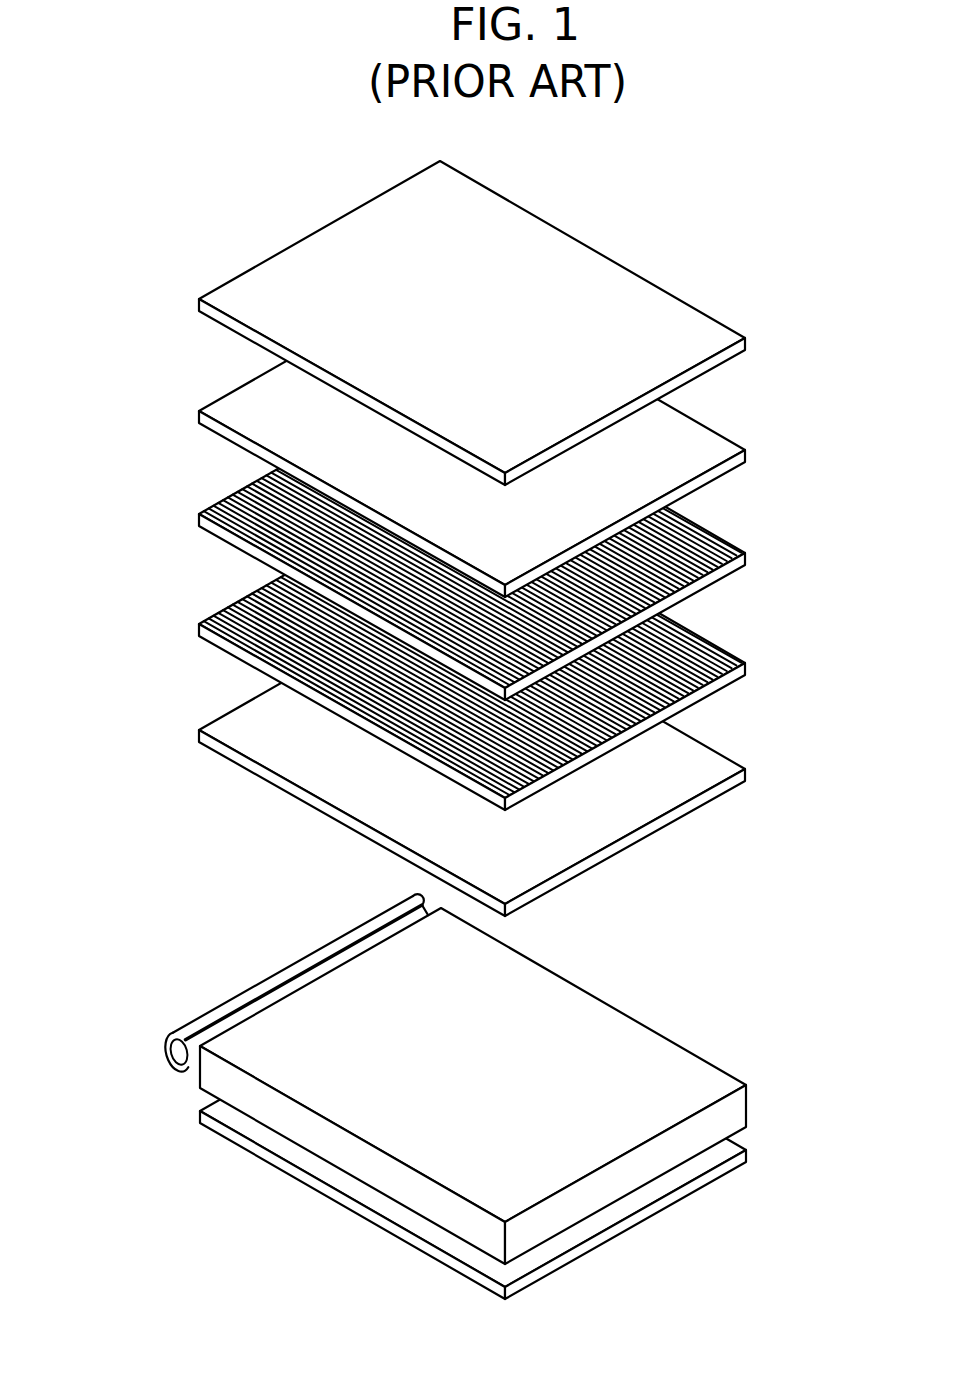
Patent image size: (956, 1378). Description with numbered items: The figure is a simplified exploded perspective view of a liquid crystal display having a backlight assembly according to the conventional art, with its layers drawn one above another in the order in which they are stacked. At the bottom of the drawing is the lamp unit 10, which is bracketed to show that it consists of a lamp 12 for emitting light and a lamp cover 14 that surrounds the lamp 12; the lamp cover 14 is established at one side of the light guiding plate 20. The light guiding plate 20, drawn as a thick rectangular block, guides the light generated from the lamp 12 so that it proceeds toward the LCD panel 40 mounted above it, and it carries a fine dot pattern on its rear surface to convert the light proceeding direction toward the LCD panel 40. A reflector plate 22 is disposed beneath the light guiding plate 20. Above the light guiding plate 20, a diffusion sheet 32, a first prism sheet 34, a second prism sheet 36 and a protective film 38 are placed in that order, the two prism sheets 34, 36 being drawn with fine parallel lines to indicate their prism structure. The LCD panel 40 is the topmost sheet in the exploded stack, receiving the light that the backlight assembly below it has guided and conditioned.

The lamp unit 10 is at (227, 1003).
The lamp 12 is at (172, 1057).
The lamp cover 14 is at (171, 1031).
The light guiding plate 20 is at (580, 1028).
The reflector plate 22 is at (333, 1195).
The diffusion sheet 32 is at (748, 774).
The first prism sheet 34 is at (748, 668).
The second prism sheet 36 is at (748, 558).
The protective film 38 is at (748, 455).
The LCD panel 40 is at (748, 343).